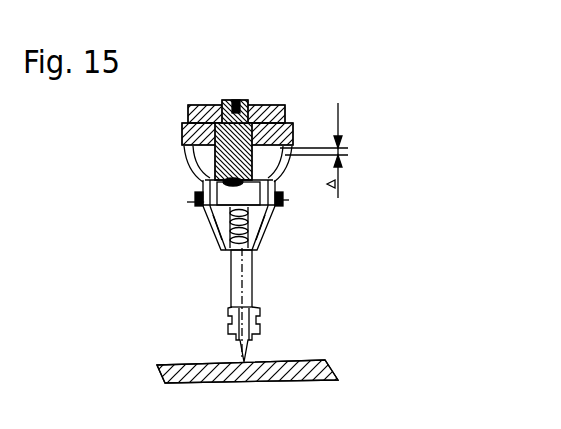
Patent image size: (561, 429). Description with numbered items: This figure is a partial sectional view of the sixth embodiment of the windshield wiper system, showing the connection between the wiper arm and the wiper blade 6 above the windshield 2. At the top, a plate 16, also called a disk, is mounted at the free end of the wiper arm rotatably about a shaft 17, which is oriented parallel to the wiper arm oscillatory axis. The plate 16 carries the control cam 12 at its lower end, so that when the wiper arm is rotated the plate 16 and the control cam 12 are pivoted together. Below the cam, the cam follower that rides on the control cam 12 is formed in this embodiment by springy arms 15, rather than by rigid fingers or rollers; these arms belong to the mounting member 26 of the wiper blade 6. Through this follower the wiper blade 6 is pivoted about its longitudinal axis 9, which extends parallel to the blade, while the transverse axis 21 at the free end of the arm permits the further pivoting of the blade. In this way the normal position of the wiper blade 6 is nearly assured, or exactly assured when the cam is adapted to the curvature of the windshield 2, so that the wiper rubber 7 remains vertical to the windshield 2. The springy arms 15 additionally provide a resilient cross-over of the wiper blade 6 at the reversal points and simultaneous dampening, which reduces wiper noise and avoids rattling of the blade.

The windshield 2 is at (313, 362).
The wiper blade 6 is at (218, 262).
The wiper rubber 7 is at (228, 337).
The longitudinal axis 9 is at (203, 185).
The control cam 12 is at (187, 162).
The springy arms 15 is at (293, 125).
The plate 16 is at (183, 138).
The shaft 17 is at (230, 100).
The transverse axis 21 is at (202, 205).
The mounting member 26 is at (270, 217).